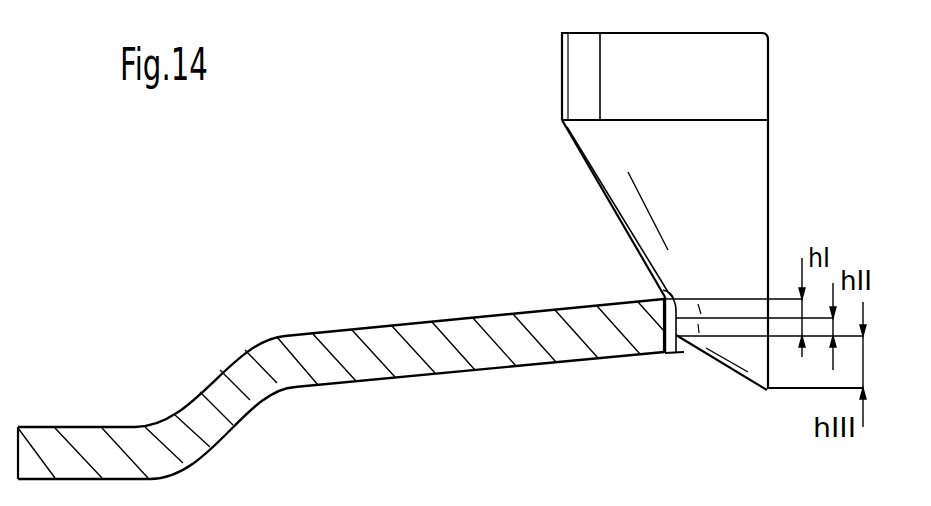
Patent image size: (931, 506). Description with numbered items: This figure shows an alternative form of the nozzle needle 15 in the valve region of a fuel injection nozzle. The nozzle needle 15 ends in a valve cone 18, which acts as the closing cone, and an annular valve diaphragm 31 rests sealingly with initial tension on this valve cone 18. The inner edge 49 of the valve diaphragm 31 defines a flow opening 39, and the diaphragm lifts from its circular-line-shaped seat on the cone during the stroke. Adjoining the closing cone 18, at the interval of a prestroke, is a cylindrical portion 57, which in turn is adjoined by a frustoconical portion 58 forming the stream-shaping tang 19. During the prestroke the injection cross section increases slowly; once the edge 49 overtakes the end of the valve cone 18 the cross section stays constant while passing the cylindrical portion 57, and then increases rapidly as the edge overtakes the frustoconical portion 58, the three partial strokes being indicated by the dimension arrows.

The nozzle needle 15 is at (578, 48).
The valve cone 18 is at (623, 230).
The stream-shaping tang 19 is at (790, 392).
The valve diaphragm 31 is at (493, 358).
The flow opening 39 is at (655, 289).
The inner edge 49 is at (663, 299).
The cylindrical portion 57 is at (676, 355).
The frustoconical portion 58 is at (730, 370).